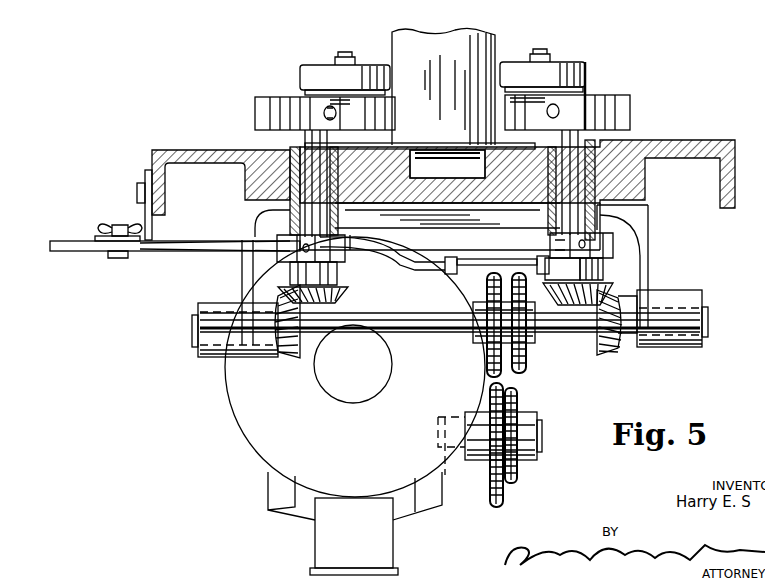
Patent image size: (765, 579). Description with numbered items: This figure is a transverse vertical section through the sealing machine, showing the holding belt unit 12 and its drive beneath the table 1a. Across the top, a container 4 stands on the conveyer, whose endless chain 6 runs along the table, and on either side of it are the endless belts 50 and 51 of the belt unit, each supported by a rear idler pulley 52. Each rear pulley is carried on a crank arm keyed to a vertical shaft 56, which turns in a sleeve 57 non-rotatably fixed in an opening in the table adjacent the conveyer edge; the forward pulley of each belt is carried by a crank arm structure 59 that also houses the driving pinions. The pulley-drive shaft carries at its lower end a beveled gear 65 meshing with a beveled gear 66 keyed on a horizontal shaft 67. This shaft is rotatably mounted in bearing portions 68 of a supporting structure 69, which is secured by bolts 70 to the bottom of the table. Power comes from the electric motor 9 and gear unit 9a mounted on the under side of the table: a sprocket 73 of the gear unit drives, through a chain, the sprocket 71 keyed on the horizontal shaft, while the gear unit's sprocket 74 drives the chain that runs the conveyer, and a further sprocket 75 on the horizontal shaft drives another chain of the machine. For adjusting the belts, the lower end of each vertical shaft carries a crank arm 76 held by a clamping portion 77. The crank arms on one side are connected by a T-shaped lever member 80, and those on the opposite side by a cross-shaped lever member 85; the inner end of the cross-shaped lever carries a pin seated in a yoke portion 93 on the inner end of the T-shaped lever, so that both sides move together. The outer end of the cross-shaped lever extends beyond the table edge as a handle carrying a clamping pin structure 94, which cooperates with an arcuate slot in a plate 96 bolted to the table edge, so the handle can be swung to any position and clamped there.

The table 1a is at (735, 178).
The container 4 is at (398, 44).
The endless chain 6 is at (442, 173).
The electric motor 9 is at (238, 418).
The gear unit 9a is at (395, 510).
The holding belt unit 12 is at (595, 67).
The endless belt 50 is at (585, 75).
The endless belt 51 is at (310, 77).
The rear idler pulley 52 is at (336, 64).
The vertical shaft 56 is at (600, 138).
The sleeve 57 is at (640, 205).
The crank arm structure 59 is at (268, 107).
The beveled gear 65 is at (340, 283).
The beveled gear 66 is at (288, 358).
The horizontal shaft 67 is at (415, 334).
The bearing portions 68 is at (203, 358).
The supporting structure 69 is at (242, 266).
The bolts 70 is at (530, 206).
The sprocket 71 is at (486, 352).
The sprocket 73 is at (490, 484).
The sprocket 74 is at (518, 470).
The sprocket 75 is at (527, 354).
The crank arm 76 is at (600, 276).
The clamping portion 77 is at (585, 243).
The T-shaped lever member 80 is at (482, 262).
The cross-shaped lever member 85 is at (175, 231).
The yoke portion 93 is at (382, 251).
The clamping pin structure 94 is at (112, 224).
The plate 96 is at (150, 208).